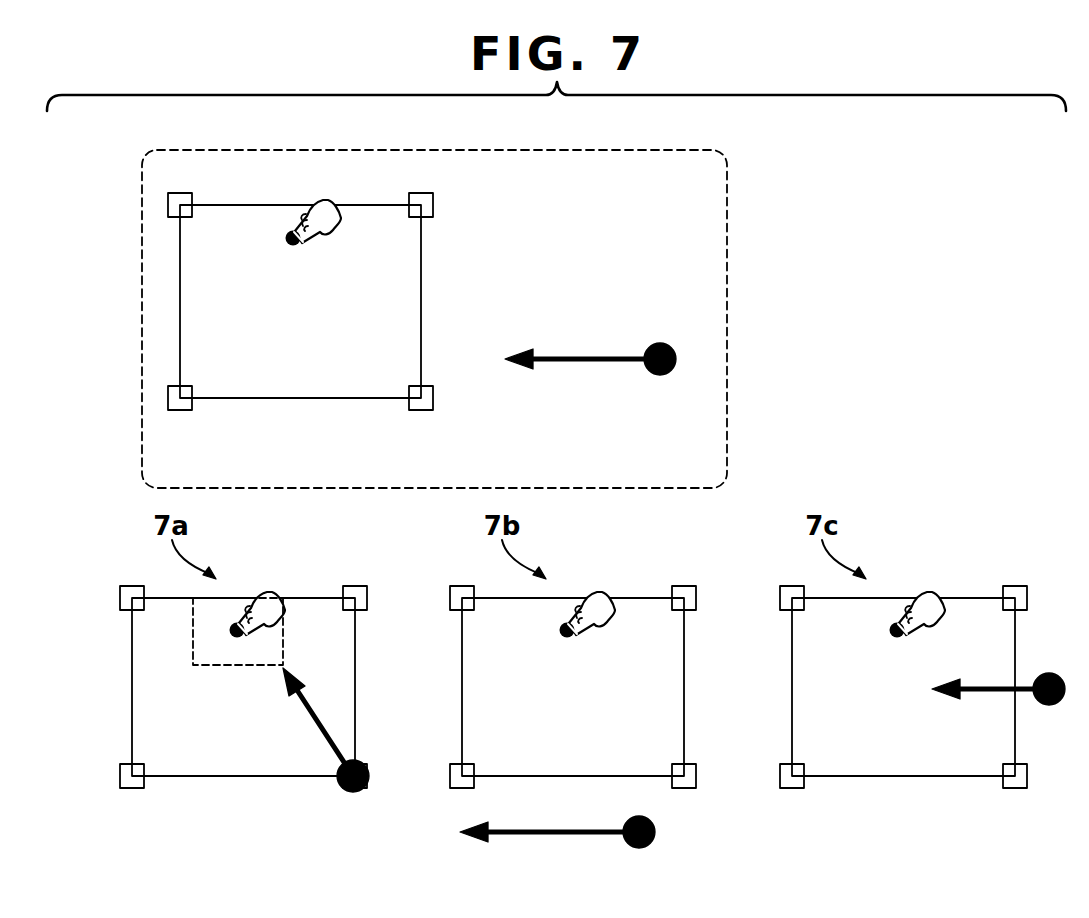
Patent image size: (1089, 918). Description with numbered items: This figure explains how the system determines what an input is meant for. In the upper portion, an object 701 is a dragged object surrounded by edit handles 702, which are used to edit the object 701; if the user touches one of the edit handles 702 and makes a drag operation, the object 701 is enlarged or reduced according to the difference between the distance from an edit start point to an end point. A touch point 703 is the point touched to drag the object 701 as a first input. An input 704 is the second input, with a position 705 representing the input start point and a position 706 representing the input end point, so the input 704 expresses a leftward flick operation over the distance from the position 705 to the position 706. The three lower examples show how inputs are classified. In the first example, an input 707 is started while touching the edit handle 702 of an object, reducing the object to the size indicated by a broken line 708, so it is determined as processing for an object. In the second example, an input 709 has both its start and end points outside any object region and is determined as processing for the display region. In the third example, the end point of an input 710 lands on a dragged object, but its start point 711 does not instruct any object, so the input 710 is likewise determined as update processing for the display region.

The object 701 is at (258, 205).
The edit handles 702 is at (168, 206).
The touch point 703 is at (287, 246).
The input 704 is at (586, 356).
The position 705 is at (659, 377).
The position 706 is at (524, 366).
The input 707 is at (313, 720).
The broken line 708 is at (226, 666).
The input 709 is at (563, 837).
The input 710 is at (987, 693).
The start point 711 is at (1047, 705).